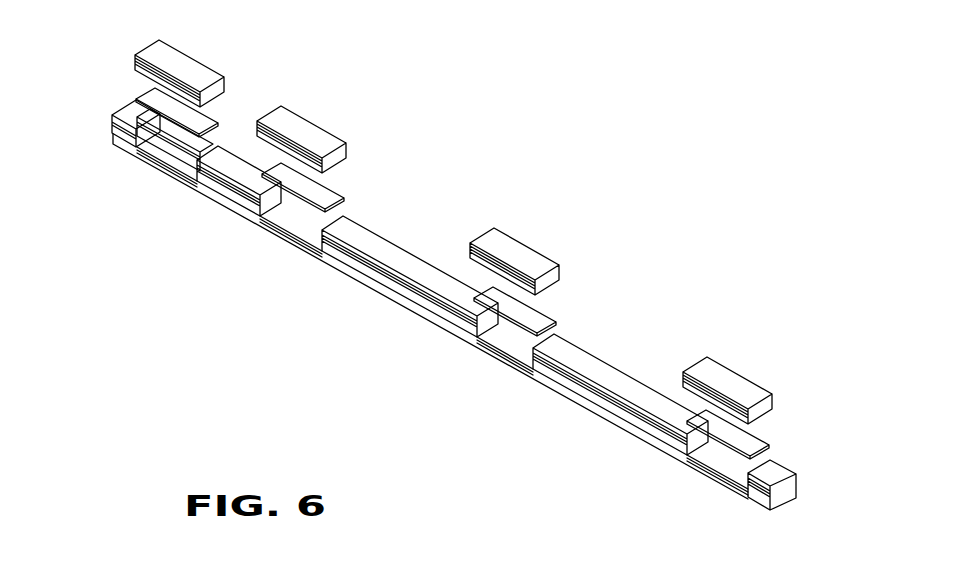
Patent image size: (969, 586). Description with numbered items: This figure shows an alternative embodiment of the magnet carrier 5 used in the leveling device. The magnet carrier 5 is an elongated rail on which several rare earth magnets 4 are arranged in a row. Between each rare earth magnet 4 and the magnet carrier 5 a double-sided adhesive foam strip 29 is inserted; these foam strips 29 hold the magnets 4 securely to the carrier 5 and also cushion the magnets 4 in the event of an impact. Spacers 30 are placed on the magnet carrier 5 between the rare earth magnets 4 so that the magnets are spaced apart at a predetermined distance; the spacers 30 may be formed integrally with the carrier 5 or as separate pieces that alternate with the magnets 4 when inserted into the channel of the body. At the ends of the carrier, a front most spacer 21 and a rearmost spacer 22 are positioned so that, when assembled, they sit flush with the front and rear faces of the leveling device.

The rare earth magnet 4 is at (187, 63).
The magnet carrier 5 is at (452, 322).
The front most spacer 21 is at (121, 136).
The rearmost spacer 22 is at (757, 507).
The double-sided adhesive foam strip 29 is at (158, 98).
The spacer 30 is at (235, 197).